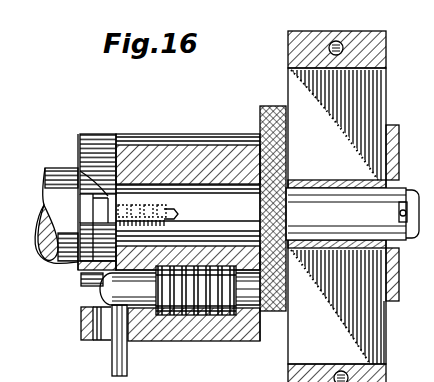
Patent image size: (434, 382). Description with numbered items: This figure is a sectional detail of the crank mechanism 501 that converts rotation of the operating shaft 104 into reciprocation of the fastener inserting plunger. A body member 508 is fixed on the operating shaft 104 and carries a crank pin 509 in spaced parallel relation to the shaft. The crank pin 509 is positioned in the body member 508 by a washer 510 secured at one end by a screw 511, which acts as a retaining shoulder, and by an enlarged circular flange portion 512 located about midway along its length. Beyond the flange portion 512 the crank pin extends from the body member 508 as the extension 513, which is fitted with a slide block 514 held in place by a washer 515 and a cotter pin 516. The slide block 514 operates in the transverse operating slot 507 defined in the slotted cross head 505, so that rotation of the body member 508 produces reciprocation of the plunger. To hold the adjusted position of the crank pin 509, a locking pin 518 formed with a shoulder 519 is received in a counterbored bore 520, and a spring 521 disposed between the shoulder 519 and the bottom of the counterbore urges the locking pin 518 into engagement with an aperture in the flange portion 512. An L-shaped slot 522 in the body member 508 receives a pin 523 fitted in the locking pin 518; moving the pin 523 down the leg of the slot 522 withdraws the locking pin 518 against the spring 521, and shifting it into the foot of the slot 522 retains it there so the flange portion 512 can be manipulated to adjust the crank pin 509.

The operating shaft 104 is at (38, 170).
The crank mechanism 501 is at (72, 126).
The cross head 505 is at (380, 40).
The transverse operating slot 507 is at (378, 81).
The body member 508 is at (158, 128).
The crank pin 509 is at (134, 186).
The washer 510 is at (100, 188).
The screw 511 is at (72, 163).
The flange portion 512 is at (256, 102).
The crank pin extension 513 is at (328, 195).
The slide block 514 is at (304, 171).
The washer 515 is at (392, 134).
The cotter pin 516 is at (398, 193).
The locking pin 518 is at (96, 280).
The shoulder 519 is at (238, 318).
The bore 520 is at (73, 269).
The spring 521 is at (198, 318).
The L-shaped slot 522 is at (88, 333).
The pin 523 is at (107, 352).